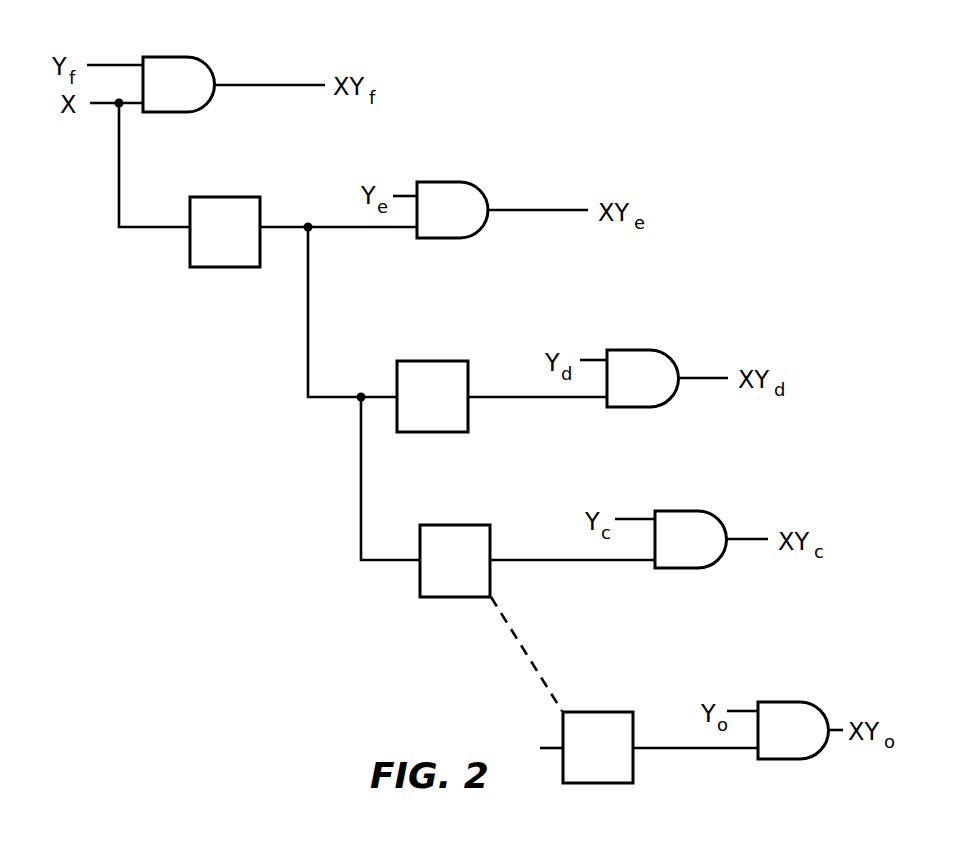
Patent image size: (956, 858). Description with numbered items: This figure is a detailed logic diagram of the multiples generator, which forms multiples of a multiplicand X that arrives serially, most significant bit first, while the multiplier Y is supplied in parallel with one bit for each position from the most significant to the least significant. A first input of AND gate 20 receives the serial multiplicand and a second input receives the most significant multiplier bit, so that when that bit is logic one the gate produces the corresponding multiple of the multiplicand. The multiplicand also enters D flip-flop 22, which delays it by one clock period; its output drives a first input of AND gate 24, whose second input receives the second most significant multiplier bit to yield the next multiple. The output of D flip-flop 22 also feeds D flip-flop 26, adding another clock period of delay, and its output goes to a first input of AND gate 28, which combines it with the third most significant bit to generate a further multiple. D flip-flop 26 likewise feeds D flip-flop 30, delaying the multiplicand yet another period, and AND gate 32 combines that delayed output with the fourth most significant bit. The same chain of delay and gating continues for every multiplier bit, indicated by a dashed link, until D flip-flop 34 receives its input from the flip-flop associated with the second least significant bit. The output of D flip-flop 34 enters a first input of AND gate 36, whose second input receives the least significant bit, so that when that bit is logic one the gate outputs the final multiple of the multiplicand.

The AND gate 20 is at (183, 57).
The D flip-flop 22 is at (221, 197).
The AND gate 24 is at (456, 182).
The D flip-flop 26 is at (425, 361).
The AND gate 28 is at (636, 350).
The D flip-flop 30 is at (445, 525).
The AND gate 32 is at (681, 511).
The D flip-flop 34 is at (590, 712).
The AND gate 36 is at (782, 702).